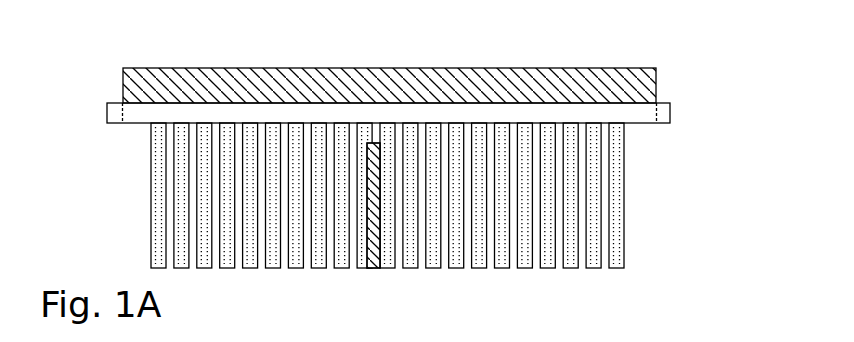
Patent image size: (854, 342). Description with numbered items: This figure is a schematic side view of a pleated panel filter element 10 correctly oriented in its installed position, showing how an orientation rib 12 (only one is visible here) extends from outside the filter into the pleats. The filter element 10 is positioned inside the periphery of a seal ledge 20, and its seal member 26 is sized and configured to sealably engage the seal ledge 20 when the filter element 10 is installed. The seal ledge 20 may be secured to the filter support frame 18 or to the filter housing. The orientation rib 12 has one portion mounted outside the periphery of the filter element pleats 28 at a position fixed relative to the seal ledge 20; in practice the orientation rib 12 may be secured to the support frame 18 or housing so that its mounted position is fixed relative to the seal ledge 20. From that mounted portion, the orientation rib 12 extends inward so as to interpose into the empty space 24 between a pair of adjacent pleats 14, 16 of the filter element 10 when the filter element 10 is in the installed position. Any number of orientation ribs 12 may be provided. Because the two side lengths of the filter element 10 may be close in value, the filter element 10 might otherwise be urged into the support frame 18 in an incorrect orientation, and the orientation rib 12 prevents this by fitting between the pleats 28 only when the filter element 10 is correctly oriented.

The pleated panel filter element 10 is at (403, 172).
The orientation rib 12 is at (376, 268).
The first adjacent pleat 14 is at (362, 264).
The second adjacent pleat 16 is at (389, 266).
The support frame 18 is at (671, 104).
The seal ledge 20 is at (116, 120).
The empty space between adjacent pleats 24 is at (377, 118).
The seal member 26 is at (122, 81).
The filter element pleats 28 is at (345, 215).